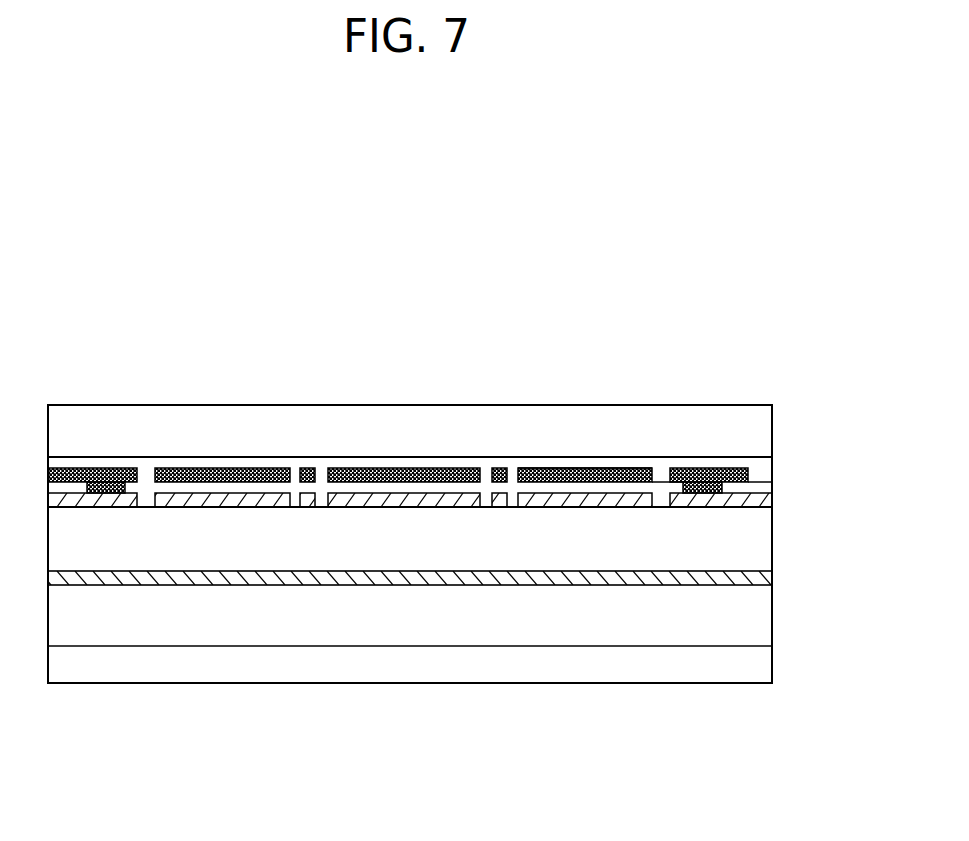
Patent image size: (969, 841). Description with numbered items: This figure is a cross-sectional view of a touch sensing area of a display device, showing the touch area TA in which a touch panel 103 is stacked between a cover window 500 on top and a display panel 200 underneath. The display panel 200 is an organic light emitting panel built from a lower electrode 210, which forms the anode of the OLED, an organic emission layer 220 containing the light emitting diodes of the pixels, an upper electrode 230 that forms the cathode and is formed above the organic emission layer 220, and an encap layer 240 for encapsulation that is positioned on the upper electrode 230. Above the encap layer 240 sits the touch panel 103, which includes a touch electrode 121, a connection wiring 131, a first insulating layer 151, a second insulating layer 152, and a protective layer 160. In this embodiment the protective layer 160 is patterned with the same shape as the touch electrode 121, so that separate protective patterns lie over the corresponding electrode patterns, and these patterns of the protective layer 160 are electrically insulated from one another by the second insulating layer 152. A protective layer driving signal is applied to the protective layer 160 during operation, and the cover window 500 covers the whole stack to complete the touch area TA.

The touch area TA is at (716, 283).
The cover window 500 is at (311, 425).
The touch panel 103 is at (713, 353).
The connection wiring 131 is at (500, 472).
The touch electrode 121 is at (550, 472).
The first insulating layer 151 is at (605, 462).
The second insulating layer 152 is at (637, 488).
The protective layer 160 is at (678, 500).
The display panel 200 is at (643, 745).
The lower electrode 210 is at (483, 663).
The organic emission layer 220 is at (415, 630).
The upper electrode 230 is at (559, 582).
The encap layer 240 is at (626, 540).